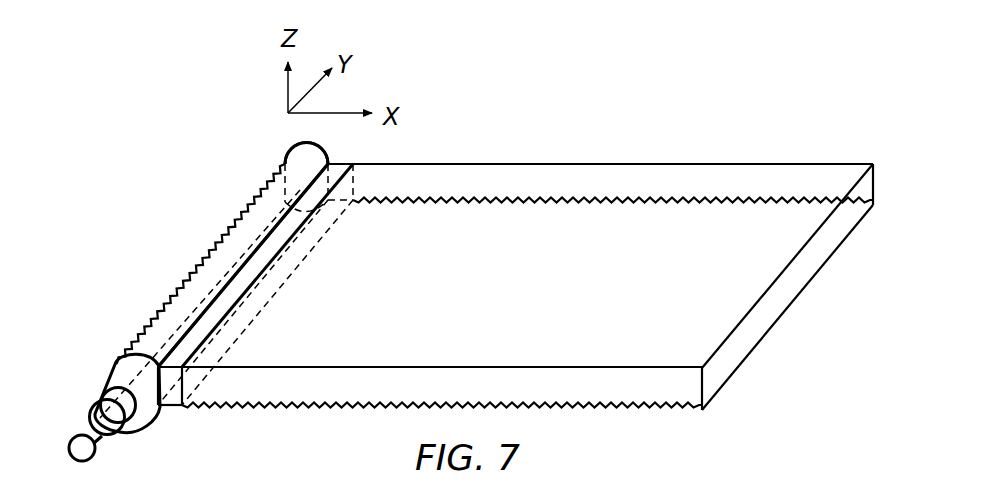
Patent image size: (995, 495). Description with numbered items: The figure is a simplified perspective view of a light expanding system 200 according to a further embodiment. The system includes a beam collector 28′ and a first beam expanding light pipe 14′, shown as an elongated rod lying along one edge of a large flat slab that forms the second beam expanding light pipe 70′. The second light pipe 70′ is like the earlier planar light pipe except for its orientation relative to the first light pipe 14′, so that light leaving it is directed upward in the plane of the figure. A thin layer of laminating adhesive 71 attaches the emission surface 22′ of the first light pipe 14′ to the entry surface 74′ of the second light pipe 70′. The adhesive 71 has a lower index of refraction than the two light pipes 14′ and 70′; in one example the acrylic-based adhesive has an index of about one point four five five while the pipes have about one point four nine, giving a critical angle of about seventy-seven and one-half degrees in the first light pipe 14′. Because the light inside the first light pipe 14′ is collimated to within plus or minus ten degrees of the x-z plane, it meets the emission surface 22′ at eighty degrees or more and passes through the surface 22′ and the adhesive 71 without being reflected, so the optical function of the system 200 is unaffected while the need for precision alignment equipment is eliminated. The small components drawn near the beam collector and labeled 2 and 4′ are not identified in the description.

The point-like light source 2 is at (72, 463).
The collimating lens 4′ is at (124, 443).
The first beam expanding light pipe 14′ is at (195, 268).
The emission surface 22′ is at (262, 246).
The beam collector 28′ is at (108, 383).
The second beam expanding light pipe 70′ is at (515, 255).
The laminating adhesive 71 is at (183, 413).
The entry surface 74′ is at (306, 266).
The light expanding system 200 is at (249, 156).